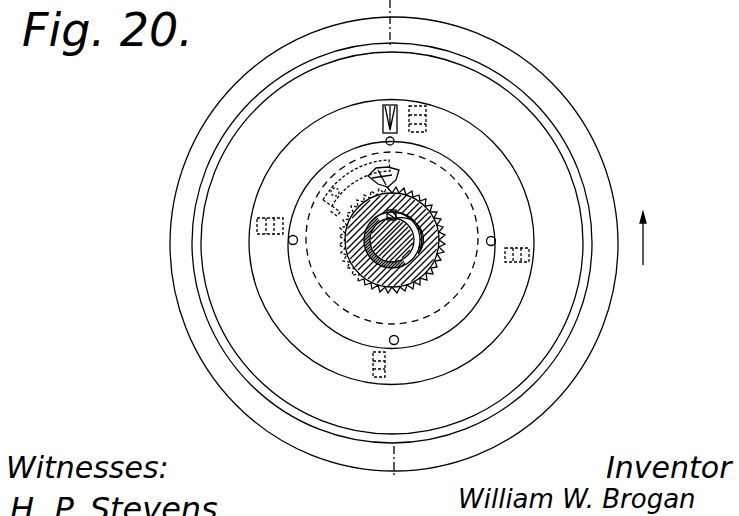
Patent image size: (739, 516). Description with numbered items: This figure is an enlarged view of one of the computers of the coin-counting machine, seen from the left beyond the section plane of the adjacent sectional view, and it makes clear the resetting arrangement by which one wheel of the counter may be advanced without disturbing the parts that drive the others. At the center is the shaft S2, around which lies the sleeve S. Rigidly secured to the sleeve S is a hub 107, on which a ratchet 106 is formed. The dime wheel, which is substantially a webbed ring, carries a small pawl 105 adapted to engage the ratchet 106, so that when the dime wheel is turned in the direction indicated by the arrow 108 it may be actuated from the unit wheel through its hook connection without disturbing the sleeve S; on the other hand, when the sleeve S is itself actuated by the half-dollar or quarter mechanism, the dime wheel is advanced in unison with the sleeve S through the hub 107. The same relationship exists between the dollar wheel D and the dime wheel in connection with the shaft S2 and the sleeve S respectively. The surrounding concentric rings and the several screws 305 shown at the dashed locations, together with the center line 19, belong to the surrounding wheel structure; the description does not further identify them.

The dollar wheel D is at (588, 138).
The center line 19 is at (399, 255).
The screws 305 is at (425, 111).
The hub 107 is at (365, 286).
The sleeve S is at (422, 287).
The shaft S2 is at (342, 262).
The ratchet 106 is at (346, 231).
The small pawl 105 is at (395, 173).
The arrow 108 is at (647, 236).